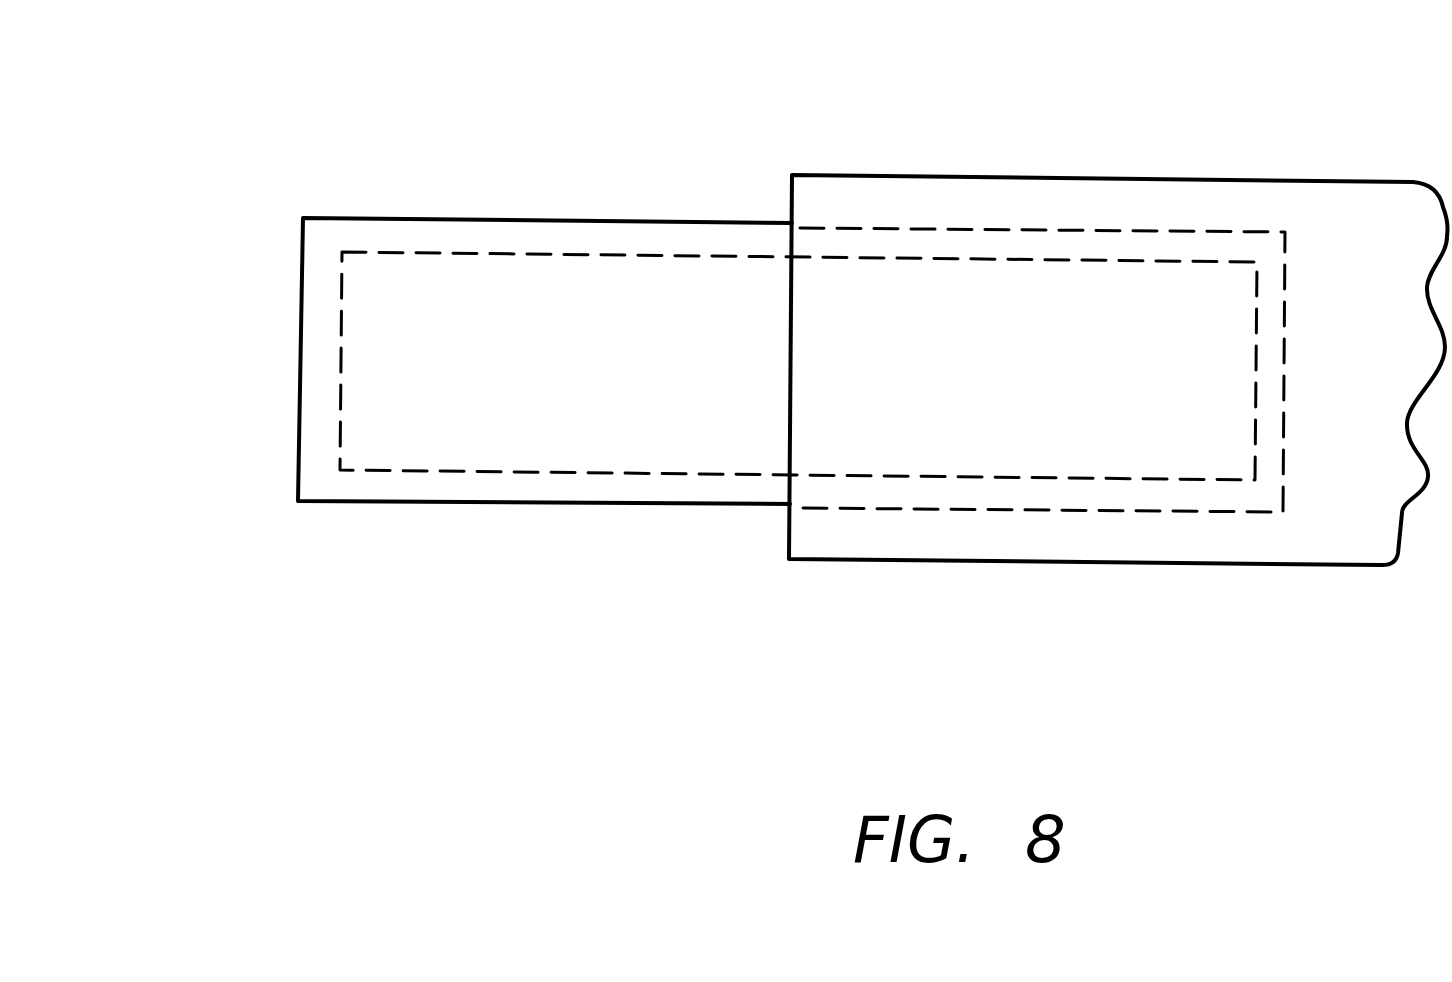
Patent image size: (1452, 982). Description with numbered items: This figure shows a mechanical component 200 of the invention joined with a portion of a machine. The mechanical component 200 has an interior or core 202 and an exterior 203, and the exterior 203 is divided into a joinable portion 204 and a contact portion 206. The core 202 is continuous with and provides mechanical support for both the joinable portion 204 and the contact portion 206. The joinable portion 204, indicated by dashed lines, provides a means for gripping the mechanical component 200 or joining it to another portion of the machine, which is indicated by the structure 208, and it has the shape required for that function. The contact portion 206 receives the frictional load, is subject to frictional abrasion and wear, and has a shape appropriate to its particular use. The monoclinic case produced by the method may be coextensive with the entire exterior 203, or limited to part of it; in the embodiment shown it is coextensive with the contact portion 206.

The mechanical component 200 is at (601, 176).
The core 202 is at (340, 340).
The exterior 203 is at (873, 332).
The joinable portion 204 is at (1043, 512).
The contact portion 206 is at (518, 503).
The structure 208 is at (1100, 177).